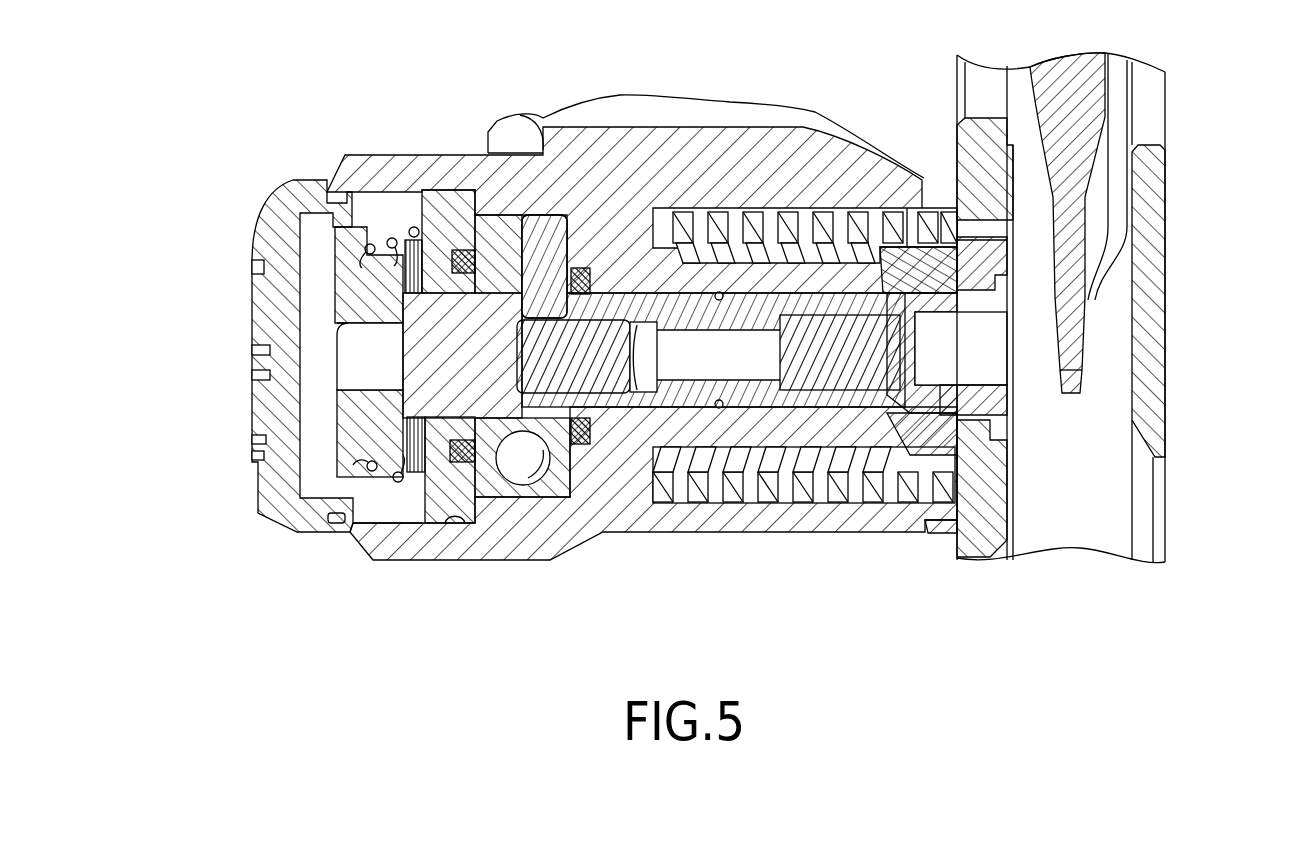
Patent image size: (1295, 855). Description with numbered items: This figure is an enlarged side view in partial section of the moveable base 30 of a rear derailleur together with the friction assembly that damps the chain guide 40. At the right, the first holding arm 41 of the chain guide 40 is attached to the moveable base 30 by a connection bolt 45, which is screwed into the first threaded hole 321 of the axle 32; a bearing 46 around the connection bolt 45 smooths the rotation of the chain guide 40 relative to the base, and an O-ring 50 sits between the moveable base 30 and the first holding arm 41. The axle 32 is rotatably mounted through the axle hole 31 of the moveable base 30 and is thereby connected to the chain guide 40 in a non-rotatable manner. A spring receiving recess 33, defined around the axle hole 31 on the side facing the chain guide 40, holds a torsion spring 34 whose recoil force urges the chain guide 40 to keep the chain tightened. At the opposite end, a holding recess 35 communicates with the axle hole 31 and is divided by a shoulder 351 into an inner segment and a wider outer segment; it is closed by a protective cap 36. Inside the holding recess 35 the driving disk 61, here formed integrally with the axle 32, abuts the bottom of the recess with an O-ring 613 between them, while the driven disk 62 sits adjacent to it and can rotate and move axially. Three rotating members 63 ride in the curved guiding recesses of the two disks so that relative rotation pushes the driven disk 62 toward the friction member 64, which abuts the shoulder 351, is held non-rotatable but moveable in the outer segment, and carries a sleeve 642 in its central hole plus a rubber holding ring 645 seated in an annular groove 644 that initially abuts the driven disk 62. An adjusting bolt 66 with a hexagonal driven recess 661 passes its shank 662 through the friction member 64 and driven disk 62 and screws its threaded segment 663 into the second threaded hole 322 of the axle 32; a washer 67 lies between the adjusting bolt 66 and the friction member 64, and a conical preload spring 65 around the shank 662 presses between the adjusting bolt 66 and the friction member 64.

The moveable base 30 is at (748, 530).
The axle hole 31 is at (896, 330).
The axle 32 is at (903, 384).
The first threaded hole 321 is at (794, 347).
The second threaded hole 322 is at (646, 340).
The spring receiving recess 33 is at (945, 490).
The torsion spring 34 is at (872, 487).
The holding recess 35 is at (393, 518).
The shoulder 351 is at (448, 522).
The protective cap 36 is at (260, 487).
The chain guide 40 is at (1073, 300).
The first holding arm 41 is at (948, 124).
The connection bolt 45 is at (1000, 408).
The bearing 46 is at (960, 247).
The O-ring 50 is at (947, 175).
The driving disk 61 is at (536, 213).
The O-ring 613 is at (584, 266).
The driven disk 62 is at (485, 210).
The rotating members 63 is at (537, 465).
The friction member 64 is at (405, 218).
The sleeve 642 is at (455, 262).
The annular groove 644 is at (412, 218).
The holding ring 645 is at (500, 470).
The preload spring 65 is at (368, 466).
The adjusting bolt 66 is at (340, 255).
The driven recess 661 is at (266, 352).
The shank 662 is at (455, 388).
The threaded segment 663 is at (603, 395).
The washer 67 is at (403, 460).